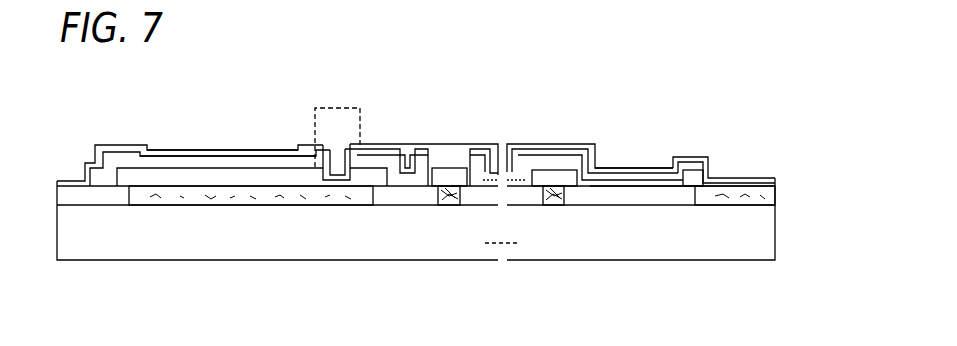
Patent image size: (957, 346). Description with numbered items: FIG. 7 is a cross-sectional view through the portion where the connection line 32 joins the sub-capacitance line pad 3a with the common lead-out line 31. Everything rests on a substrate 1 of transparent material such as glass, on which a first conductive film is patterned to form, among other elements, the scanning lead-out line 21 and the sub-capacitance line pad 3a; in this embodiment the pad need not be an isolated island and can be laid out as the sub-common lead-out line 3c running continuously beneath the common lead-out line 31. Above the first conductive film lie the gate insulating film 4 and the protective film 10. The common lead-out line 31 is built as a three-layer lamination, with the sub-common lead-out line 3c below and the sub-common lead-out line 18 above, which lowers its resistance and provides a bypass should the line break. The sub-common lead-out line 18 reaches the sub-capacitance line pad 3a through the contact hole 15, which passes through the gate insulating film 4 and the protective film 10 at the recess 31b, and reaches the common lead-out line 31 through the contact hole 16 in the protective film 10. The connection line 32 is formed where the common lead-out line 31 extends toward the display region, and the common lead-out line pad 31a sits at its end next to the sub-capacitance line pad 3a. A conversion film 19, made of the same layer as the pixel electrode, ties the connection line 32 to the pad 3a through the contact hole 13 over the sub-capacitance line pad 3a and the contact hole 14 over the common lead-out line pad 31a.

The substrate 1 is at (416, 256).
The gate insulating film 4 is at (416, 257).
The sub-common lead-out line 3c is at (251, 260).
The sub-capacitance line pad 3a is at (735, 260).
The scanning lead-out line 21 is at (507, 260).
The common lead-out line 31 is at (252, 131).
The recess 31b is at (339, 122).
The contact hole 15 is at (339, 147).
The protective film 10 is at (367, 131).
The sub-common lead-out line 18 is at (222, 113).
The contact hole 16 is at (411, 128).
The connection line 32 is at (504, 131).
The contact hole 14 is at (634, 122).
The conversion film 19 is at (704, 131).
The contact hole 13 is at (724, 130).
The common lead-out line pad 31a is at (642, 260).